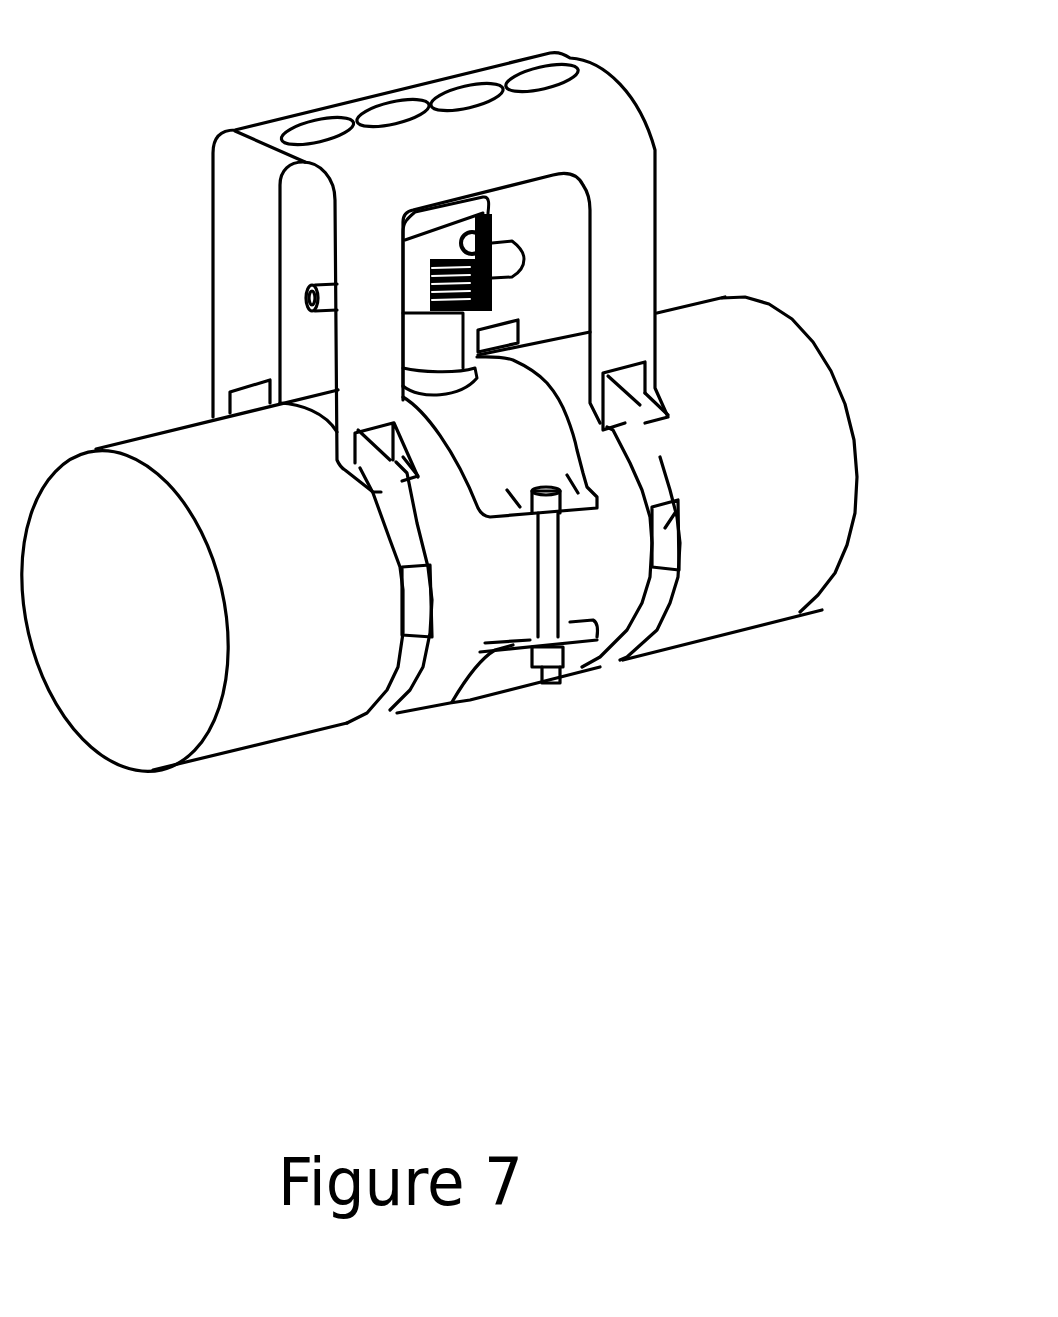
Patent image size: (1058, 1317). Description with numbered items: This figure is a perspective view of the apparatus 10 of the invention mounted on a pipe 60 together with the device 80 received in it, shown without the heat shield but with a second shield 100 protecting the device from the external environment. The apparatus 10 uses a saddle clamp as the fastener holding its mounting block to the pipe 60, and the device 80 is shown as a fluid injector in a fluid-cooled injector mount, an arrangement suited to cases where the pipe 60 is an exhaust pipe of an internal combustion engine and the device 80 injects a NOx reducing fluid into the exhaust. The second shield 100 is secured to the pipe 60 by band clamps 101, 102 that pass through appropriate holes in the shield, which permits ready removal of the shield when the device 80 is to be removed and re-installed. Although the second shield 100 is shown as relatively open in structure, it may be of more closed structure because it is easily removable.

The apparatus 10 is at (525, 438).
The pipe 60 is at (761, 440).
The device 80 is at (428, 251).
The second shield 100 is at (620, 190).
The band clamp 101 is at (412, 603).
The band clamp 102 is at (652, 617).